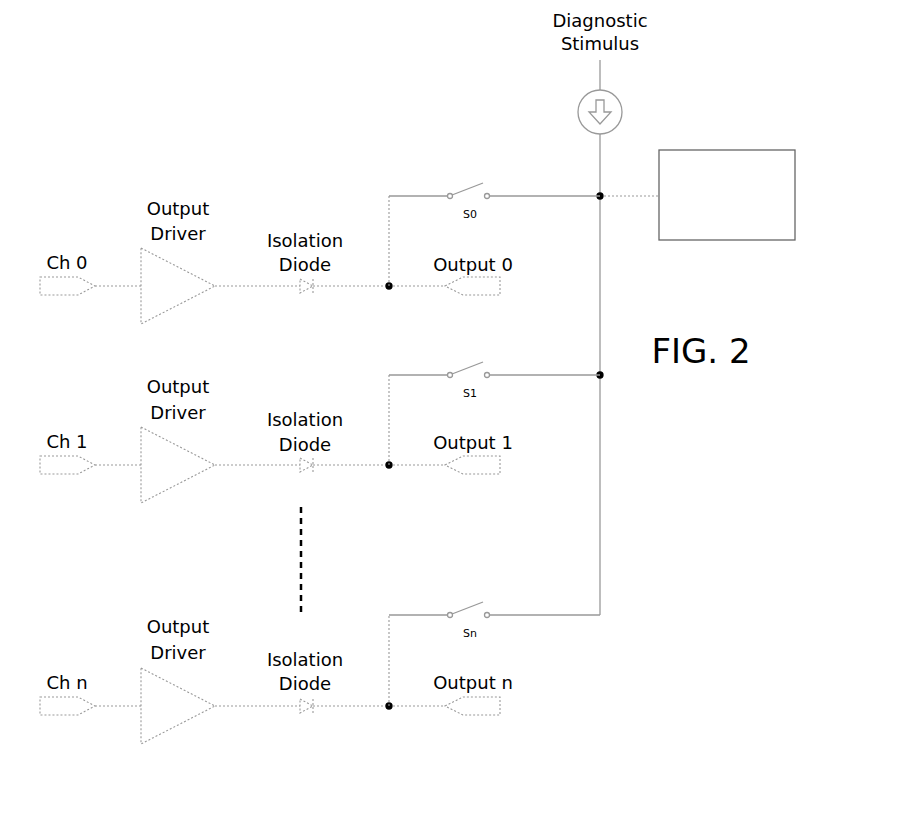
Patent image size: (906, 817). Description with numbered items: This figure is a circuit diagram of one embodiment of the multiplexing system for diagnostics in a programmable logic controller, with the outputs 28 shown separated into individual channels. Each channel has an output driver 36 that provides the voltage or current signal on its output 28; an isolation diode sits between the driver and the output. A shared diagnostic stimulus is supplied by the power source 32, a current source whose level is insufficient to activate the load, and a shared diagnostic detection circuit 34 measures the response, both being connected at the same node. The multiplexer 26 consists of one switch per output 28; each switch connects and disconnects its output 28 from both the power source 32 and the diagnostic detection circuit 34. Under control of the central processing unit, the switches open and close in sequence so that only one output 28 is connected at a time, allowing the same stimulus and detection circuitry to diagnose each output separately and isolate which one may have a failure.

The multiplexer 26 is at (468, 188).
The outputs 28 is at (487, 283).
The power source 32 is at (580, 113).
The diagnostic detection circuit 34 is at (712, 150).
The output drivers 36 is at (178, 496).